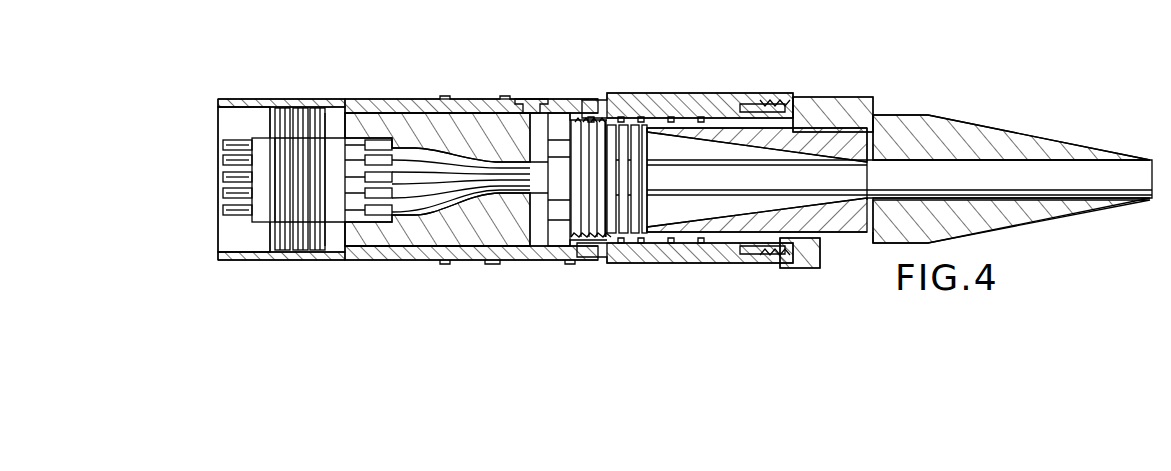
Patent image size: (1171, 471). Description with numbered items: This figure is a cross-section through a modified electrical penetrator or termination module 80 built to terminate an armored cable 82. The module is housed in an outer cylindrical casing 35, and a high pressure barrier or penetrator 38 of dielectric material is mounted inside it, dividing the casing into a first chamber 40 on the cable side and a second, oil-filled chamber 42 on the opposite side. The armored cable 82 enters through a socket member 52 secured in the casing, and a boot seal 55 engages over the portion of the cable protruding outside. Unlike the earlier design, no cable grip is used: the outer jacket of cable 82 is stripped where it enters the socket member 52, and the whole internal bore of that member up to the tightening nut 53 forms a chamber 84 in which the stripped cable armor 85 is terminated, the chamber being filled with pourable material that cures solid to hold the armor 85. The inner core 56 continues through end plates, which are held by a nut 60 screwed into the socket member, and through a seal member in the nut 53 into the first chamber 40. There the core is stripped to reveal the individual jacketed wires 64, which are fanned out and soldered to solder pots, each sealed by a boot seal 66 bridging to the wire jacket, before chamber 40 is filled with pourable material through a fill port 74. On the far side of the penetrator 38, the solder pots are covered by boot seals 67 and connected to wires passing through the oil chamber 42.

The termination module 80 is at (391, 90).
The casing 35 is at (428, 103).
The penetrator 38 is at (317, 110).
The first chamber 40 is at (526, 232).
The second chamber 42 is at (246, 243).
The socket member 52 is at (720, 130).
The tightening nut 53 is at (800, 255).
The boot seal 55 is at (1037, 205).
The inner core 56 is at (752, 185).
The nut 60 is at (567, 222).
The conductors 64 is at (487, 193).
The boot seal 66 is at (373, 182).
The boot seals 67 is at (258, 173).
The fill port 74 is at (533, 100).
The armored cable 82 is at (1045, 175).
The chamber 84 is at (675, 205).
The cable armor 85 is at (820, 127).